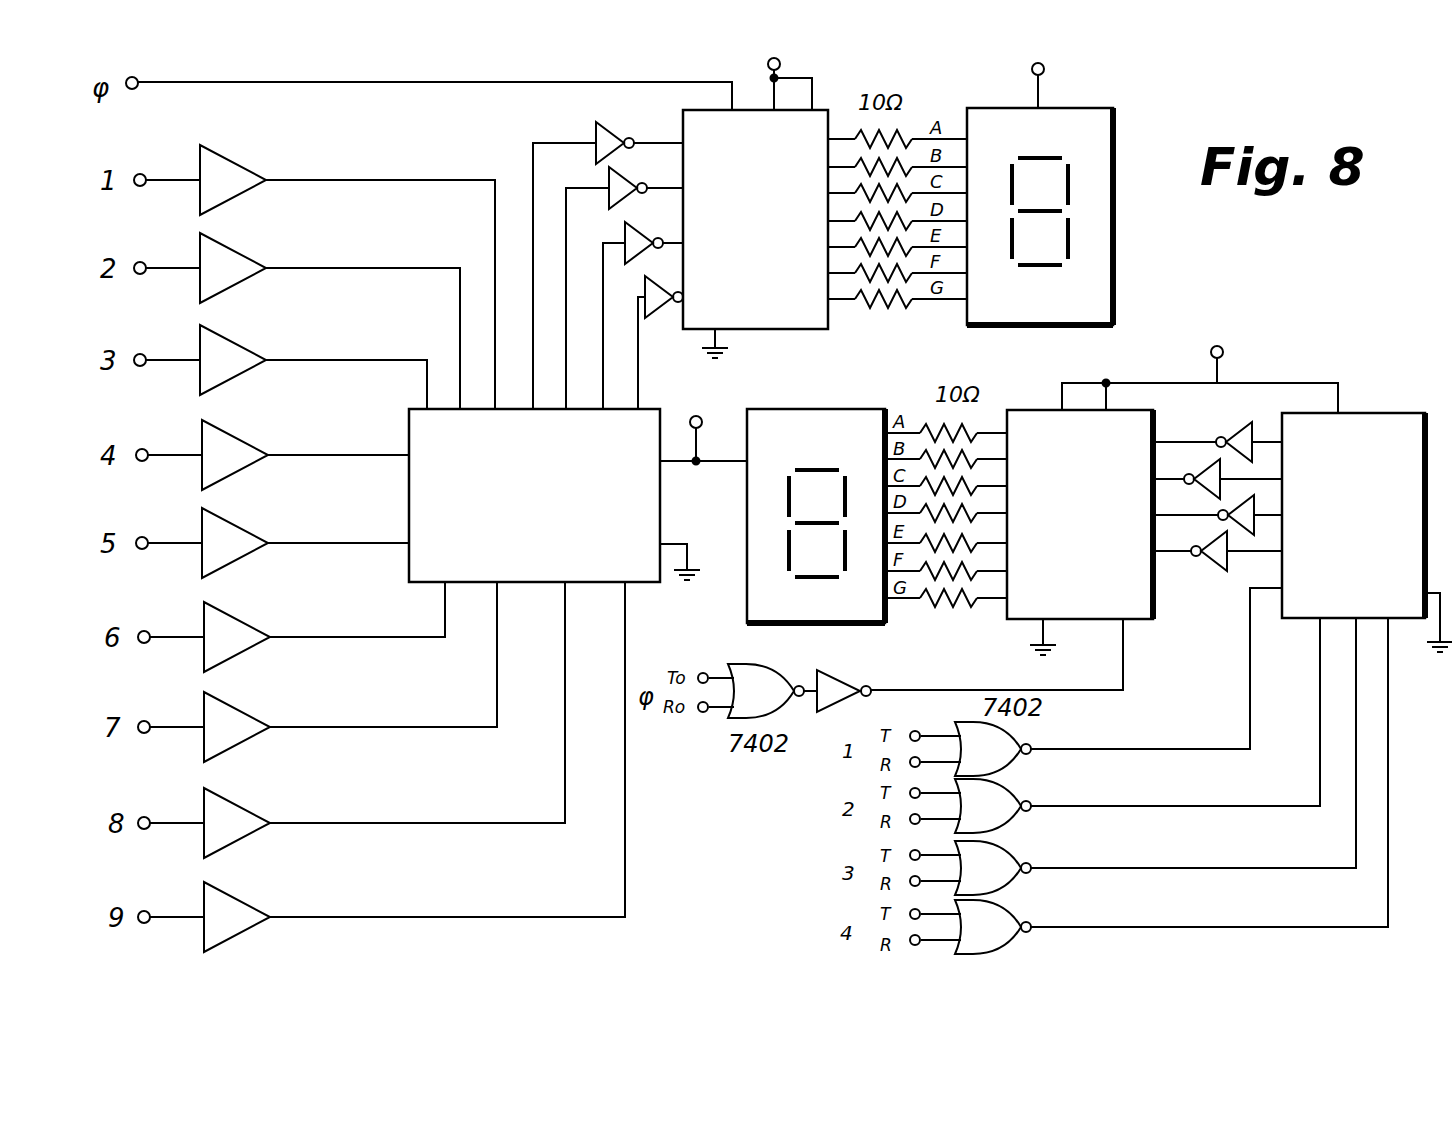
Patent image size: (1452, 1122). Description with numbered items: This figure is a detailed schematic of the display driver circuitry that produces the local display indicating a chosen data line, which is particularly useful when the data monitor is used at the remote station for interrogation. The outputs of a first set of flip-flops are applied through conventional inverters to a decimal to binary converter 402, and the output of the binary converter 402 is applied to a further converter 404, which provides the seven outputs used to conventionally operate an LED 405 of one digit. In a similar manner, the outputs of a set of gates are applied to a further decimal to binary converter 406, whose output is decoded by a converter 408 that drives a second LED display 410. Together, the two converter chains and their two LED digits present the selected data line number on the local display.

The decimal to binary converter 402 is at (410, 488).
The further converter 404 is at (775, 320).
The LED 405 is at (1098, 232).
The further decimal to binary converter 406 is at (1407, 390).
The converter 408 is at (1138, 607).
The second LED display 410 is at (767, 604).